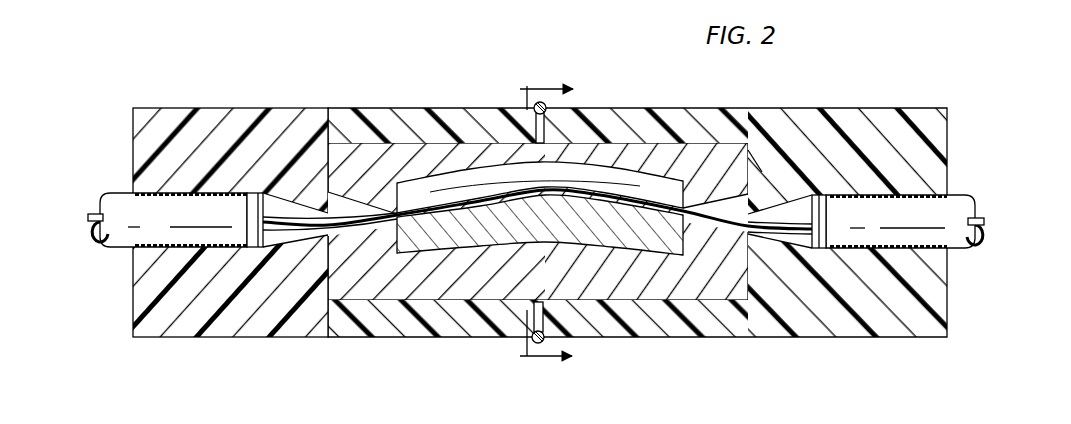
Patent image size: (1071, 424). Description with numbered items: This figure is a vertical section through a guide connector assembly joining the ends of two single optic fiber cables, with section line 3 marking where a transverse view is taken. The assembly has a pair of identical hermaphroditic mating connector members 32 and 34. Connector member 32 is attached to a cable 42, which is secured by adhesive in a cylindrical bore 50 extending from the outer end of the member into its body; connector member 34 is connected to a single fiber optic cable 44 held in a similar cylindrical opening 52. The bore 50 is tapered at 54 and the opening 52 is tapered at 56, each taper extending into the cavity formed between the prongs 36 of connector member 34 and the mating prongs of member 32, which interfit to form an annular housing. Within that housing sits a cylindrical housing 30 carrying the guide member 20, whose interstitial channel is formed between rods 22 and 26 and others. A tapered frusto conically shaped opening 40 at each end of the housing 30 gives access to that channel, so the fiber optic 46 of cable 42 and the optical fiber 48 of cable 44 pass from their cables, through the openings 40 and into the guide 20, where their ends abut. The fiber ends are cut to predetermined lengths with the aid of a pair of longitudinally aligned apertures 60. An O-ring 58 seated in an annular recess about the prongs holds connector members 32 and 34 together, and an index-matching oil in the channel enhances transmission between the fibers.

The section line 3- 3 is at (531, 226).
The guide member 20 is at (614, 183).
The rod 22 is at (565, 173).
The rod 26 is at (567, 242).
The cylindrical housing 30 is at (657, 322).
The connector member 32 is at (272, 80).
The connector member 34 is at (830, 125).
The prongs 36 is at (404, 124).
The tapered frusto conically shaped opening 40 is at (350, 200).
The cable 42 is at (123, 249).
The single fiber optic cable 44 is at (962, 252).
The fiber optic 46 is at (105, 212).
The optical fiber 48 is at (750, 226).
The cylindrical bore 50 is at (237, 296).
The cylindrical opening 52 is at (787, 243).
The taper 54 is at (270, 243).
The taper 56 is at (802, 302).
The O-ring 58 is at (540, 96).
The longitudinally aligned apertures 60 is at (562, 112).